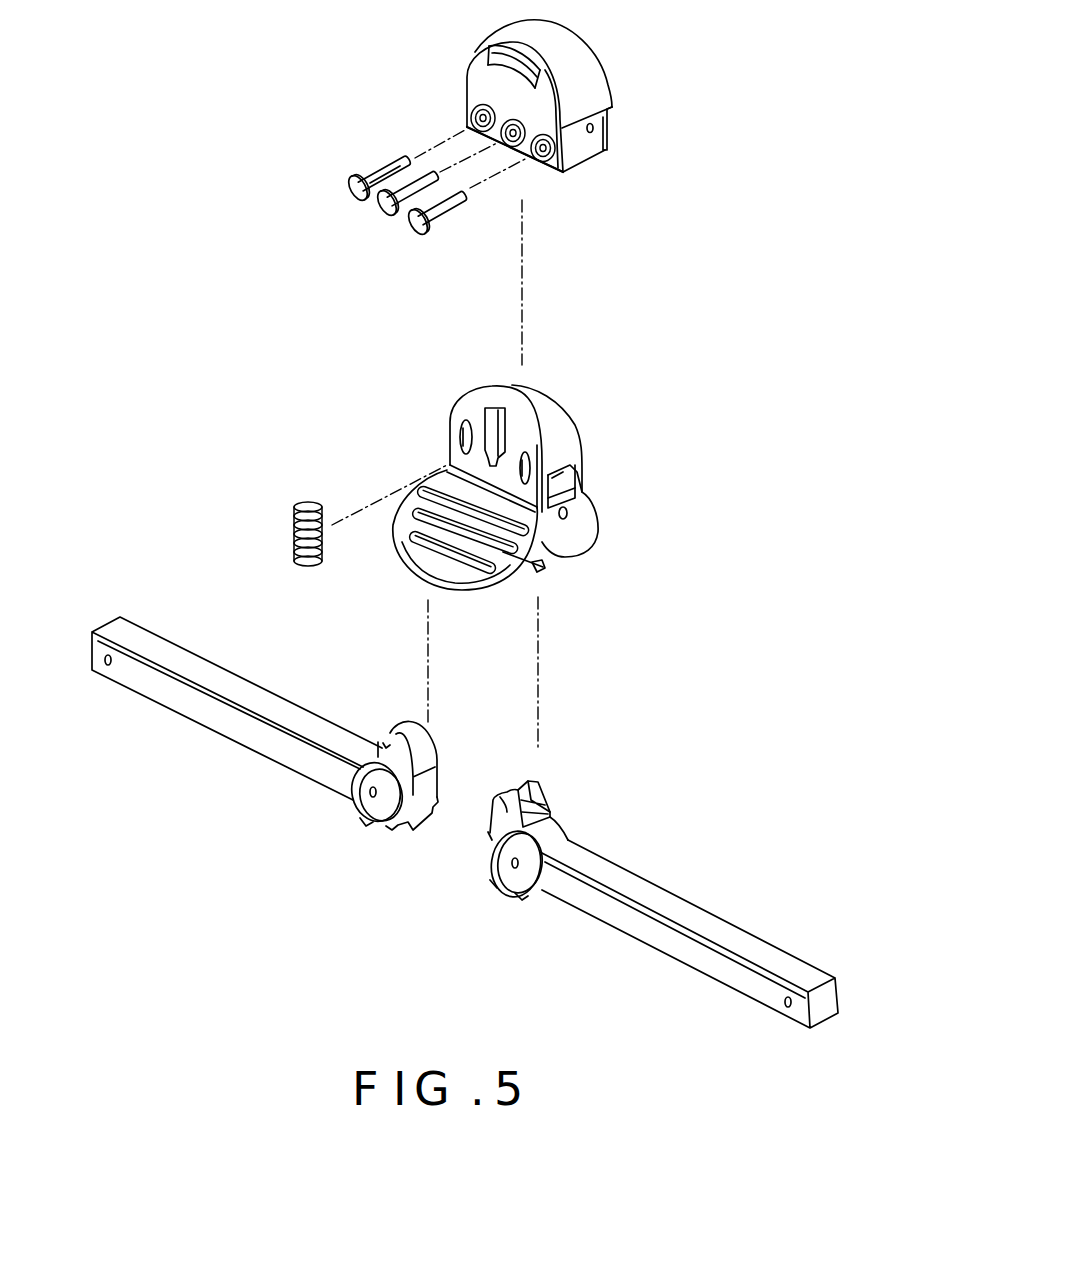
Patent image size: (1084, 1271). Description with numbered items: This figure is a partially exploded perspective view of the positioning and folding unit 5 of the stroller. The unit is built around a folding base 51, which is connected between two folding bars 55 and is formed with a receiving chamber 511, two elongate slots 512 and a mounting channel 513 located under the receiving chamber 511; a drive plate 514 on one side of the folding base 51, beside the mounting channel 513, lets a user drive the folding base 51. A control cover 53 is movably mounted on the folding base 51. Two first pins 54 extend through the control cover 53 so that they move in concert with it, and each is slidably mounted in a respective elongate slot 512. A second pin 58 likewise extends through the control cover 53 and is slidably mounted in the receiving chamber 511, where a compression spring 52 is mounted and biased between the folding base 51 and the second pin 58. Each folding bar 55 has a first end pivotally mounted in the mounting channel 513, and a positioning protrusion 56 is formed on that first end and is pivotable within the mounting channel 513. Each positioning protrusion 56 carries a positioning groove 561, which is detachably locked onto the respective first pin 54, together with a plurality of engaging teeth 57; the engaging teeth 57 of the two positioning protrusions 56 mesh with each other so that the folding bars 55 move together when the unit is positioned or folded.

The positioning and folding unit 5 is at (280, 398).
The folding base 51 is at (553, 429).
The receiving chamber 511 is at (493, 420).
The elongate slots 512 is at (463, 424).
The mounting channel 513 is at (592, 512).
The drive plate 514 is at (545, 568).
The compression spring 52 is at (303, 502).
The control cover 53 is at (597, 74).
The first pins 54 is at (416, 222).
The folding bars 55 is at (181, 657).
The positioning protrusions 56 is at (486, 724).
The positioning groove 561 is at (635, 795).
The engaging teeth 57 is at (393, 830).
The second pin 58 is at (412, 188).